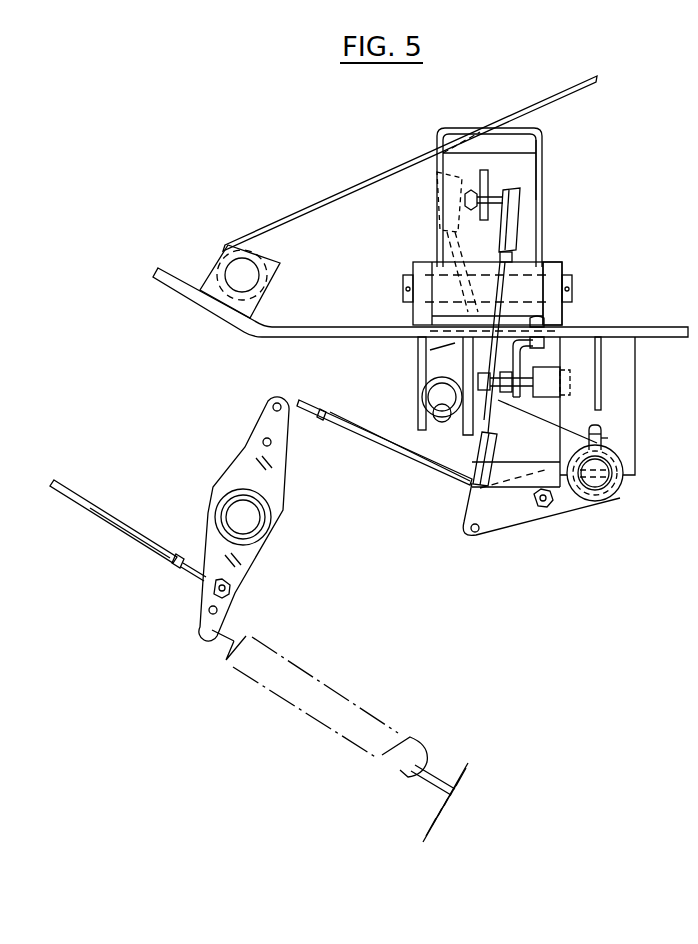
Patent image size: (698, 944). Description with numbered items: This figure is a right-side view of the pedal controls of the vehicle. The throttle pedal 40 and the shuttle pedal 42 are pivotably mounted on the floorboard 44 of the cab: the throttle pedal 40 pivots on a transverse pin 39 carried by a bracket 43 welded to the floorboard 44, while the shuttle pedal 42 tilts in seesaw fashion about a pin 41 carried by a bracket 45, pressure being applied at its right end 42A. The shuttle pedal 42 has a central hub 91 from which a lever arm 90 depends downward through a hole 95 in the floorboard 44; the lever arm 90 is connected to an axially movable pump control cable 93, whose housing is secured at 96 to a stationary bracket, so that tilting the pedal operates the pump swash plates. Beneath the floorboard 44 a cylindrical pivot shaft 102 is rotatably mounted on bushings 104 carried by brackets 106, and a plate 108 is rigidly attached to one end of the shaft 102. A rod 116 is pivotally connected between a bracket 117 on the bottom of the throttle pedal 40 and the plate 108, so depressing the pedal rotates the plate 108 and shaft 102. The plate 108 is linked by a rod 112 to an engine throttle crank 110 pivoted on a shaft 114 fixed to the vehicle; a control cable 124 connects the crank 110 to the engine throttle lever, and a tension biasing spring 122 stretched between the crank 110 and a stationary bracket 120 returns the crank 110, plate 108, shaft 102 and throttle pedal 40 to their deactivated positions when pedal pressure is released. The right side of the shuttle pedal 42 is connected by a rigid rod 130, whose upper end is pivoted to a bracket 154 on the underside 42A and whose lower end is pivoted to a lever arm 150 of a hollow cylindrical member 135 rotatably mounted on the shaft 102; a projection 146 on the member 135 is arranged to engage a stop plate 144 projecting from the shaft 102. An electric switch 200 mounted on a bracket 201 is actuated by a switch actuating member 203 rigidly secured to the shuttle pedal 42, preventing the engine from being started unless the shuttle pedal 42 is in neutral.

The pin 39 is at (252, 281).
The throttle pedal 40 is at (556, 95).
The pin 41 is at (572, 284).
The shuttle pedal 42 is at (468, 111).
The right end of shuttle pedal 42A is at (545, 130).
The bracket 43 is at (276, 266).
The floorboard 44 is at (652, 327).
The bracket 45 is at (562, 263).
The lever arm 90 is at (462, 352).
The central hub 91 is at (440, 292).
The pump control cable 93 is at (443, 421).
The hole 95 is at (430, 346).
The cable housing end securement 96 is at (424, 404).
The pivot shaft 102 is at (600, 489).
The bushings 104 is at (625, 483).
The brackets 106 is at (628, 371).
The plate 108 is at (495, 540).
The engine throttle crank 110 is at (279, 477).
The rod 112 is at (403, 458).
The shaft 114 is at (262, 519).
The rod 116 is at (450, 241).
The bracket 117 is at (438, 176).
The bracket 120 is at (438, 769).
The biasing spring 122 is at (328, 698).
The control cable 124 is at (128, 522).
The rod 130 is at (515, 212).
The hollow cylindrical member 135 is at (617, 490).
The stop plate 144 is at (603, 424).
The projection 146 is at (608, 440).
The lever arm 150 is at (470, 495).
The bracket 154 is at (488, 179).
The electric switch 200 is at (549, 397).
The bracket 201 is at (520, 360).
The switch actuating member 203 is at (478, 380).